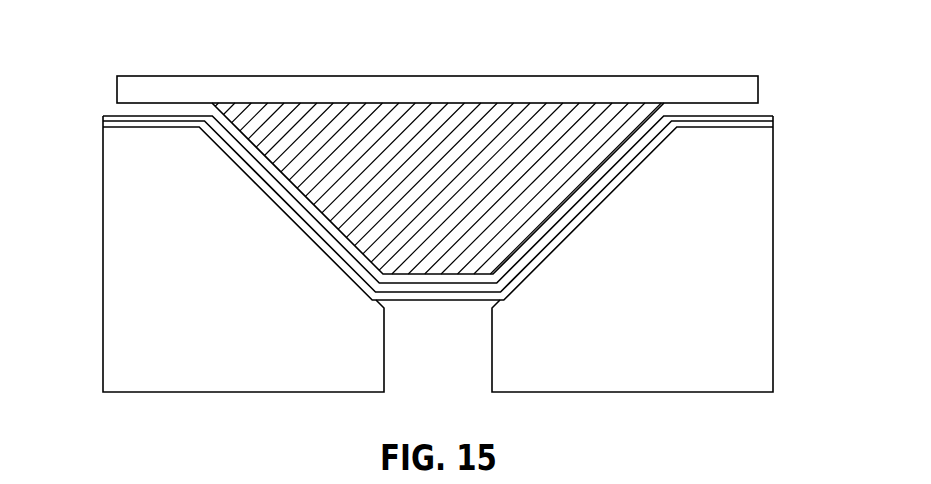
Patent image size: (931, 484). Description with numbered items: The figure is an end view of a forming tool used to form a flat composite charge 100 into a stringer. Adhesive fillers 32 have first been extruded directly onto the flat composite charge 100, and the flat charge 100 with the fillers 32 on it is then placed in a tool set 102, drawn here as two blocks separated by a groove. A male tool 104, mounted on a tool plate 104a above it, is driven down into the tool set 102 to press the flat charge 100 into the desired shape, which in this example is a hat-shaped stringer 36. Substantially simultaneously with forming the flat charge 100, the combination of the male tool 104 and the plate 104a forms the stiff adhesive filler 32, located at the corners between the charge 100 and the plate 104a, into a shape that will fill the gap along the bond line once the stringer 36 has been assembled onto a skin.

The tool plate 104a is at (187, 88).
The male tool 104 is at (440, 256).
The hat-shaped stringer 36 is at (552, 233).
The flat composite charge 100 is at (258, 178).
The tool set 102 is at (143, 338).
The adhesive filler 32 is at (203, 115).